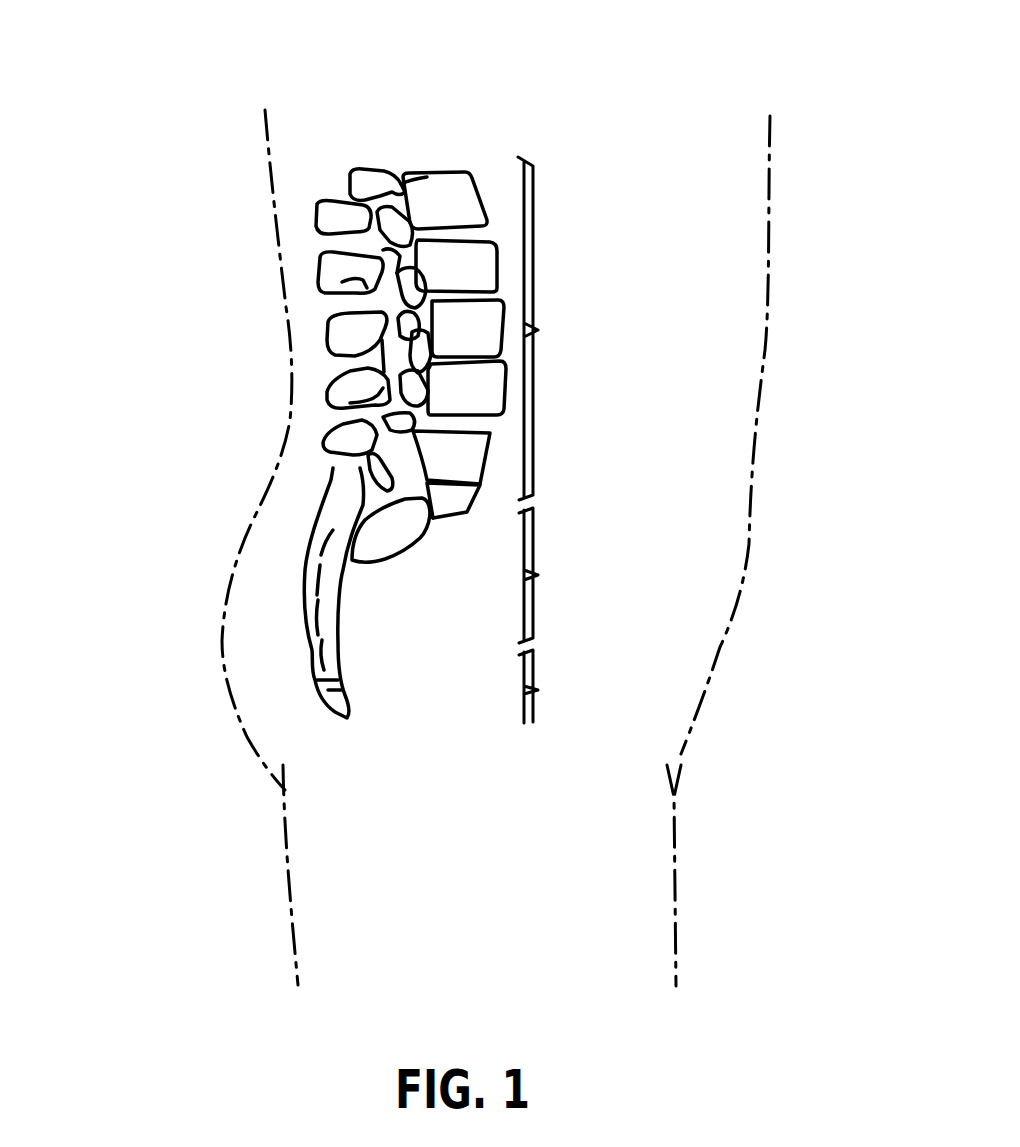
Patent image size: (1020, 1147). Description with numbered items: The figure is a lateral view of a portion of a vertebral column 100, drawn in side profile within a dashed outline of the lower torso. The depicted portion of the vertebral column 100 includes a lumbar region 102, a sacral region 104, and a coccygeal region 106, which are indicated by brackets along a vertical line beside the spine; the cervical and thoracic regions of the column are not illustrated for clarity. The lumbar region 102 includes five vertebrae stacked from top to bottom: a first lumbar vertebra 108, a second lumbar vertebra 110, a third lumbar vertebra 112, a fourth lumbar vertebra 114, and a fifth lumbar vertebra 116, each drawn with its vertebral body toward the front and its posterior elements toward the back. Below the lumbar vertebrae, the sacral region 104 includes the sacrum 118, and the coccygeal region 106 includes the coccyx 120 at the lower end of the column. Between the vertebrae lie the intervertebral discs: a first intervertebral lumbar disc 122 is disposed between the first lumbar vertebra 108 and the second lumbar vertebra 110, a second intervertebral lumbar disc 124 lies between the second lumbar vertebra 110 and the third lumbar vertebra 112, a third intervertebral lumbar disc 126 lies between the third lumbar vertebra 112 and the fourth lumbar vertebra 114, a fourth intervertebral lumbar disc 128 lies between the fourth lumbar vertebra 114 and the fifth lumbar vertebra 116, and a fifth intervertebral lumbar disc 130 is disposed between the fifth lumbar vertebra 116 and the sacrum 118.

The vertebral column 100 is at (735, 118).
The lumbar region 102 is at (537, 330).
The sacral region 104 is at (537, 575).
The coccygeal region 106 is at (537, 690).
The first lumbar vertebra 108 is at (403, 193).
The second lumbar vertebra 110 is at (408, 259).
The third lumbar vertebra 112 is at (463, 320).
The fourth lumbar vertebra 114 is at (450, 390).
The fifth lumbar vertebra 116 is at (427, 447).
The sacrum 118 is at (343, 538).
The coccyx 120 is at (327, 665).
The first intervertebral lumbar disc 122 is at (367, 200).
The second intervertebral lumbar disc 124 is at (433, 288).
The third intervertebral lumbar disc 126 is at (468, 355).
The fourth intervertebral lumbar disc 128 is at (437, 417).
The fifth intervertebral lumbar disc 130 is at (452, 488).